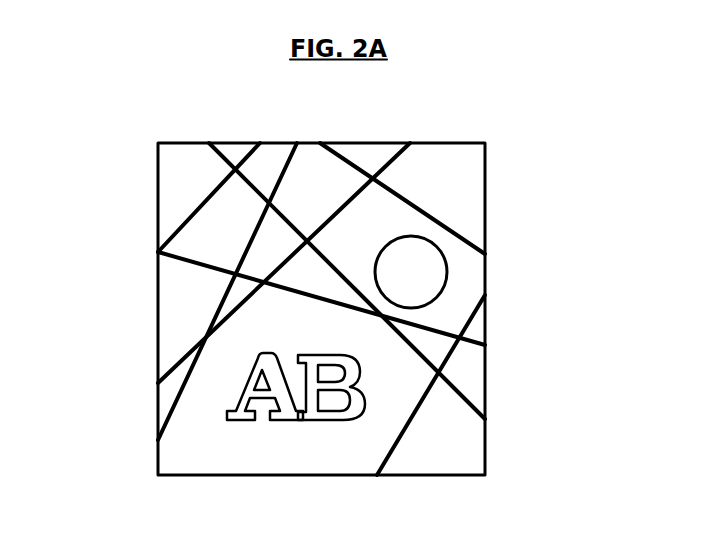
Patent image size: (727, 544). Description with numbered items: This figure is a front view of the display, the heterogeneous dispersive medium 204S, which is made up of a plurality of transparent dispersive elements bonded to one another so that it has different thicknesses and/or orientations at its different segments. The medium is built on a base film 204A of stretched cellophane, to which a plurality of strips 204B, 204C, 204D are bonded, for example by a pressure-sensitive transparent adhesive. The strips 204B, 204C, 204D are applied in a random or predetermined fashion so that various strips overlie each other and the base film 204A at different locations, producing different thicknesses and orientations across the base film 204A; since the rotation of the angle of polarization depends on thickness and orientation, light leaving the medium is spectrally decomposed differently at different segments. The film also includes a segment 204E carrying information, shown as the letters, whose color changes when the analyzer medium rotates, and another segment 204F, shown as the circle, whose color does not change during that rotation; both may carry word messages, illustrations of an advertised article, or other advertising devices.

The test image sheet 204S is at (490, 114).
The base film 204A is at (173, 205).
The strip 204B is at (300, 162).
The strip 204C is at (322, 463).
The strip 204D is at (392, 225).
The segment carrying information 204E is at (232, 405).
The segment of constant color 204F is at (448, 273).